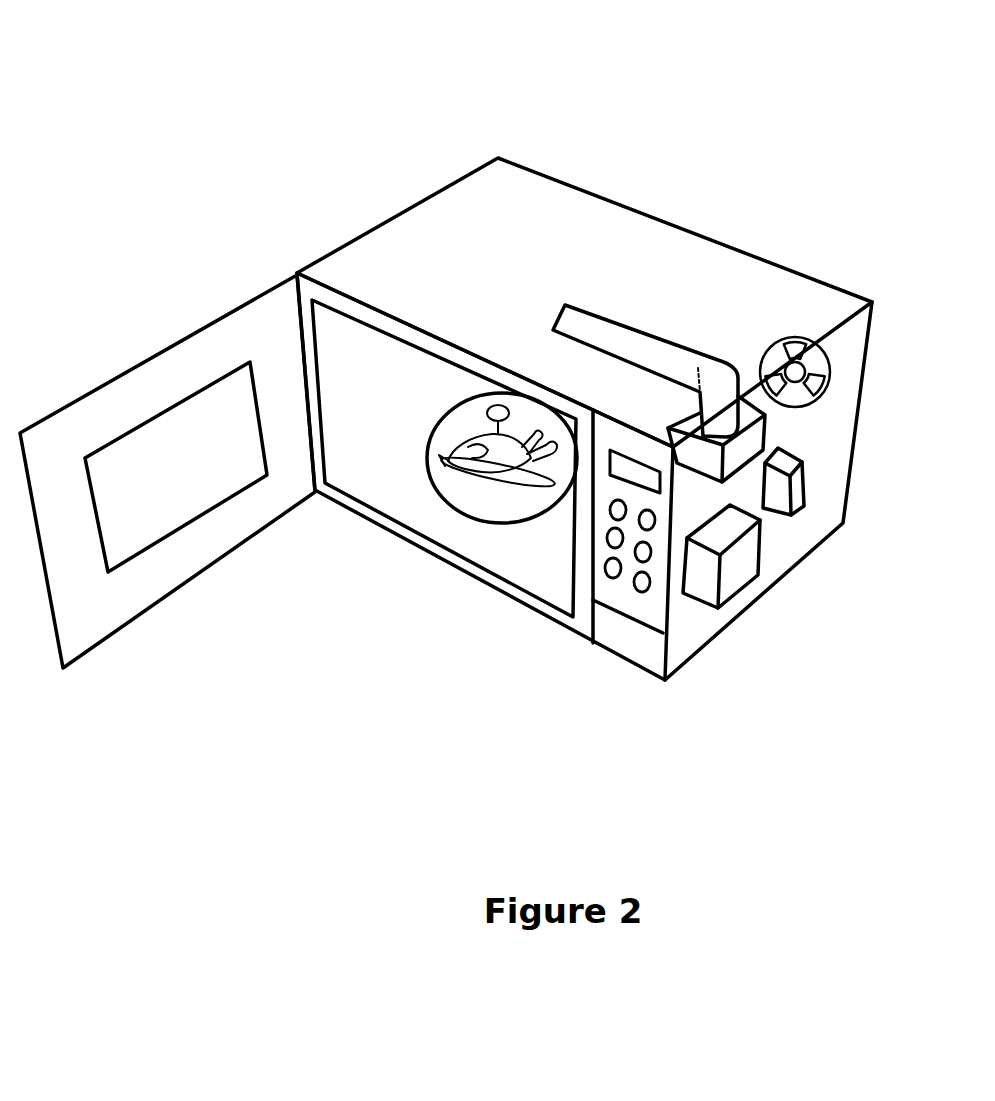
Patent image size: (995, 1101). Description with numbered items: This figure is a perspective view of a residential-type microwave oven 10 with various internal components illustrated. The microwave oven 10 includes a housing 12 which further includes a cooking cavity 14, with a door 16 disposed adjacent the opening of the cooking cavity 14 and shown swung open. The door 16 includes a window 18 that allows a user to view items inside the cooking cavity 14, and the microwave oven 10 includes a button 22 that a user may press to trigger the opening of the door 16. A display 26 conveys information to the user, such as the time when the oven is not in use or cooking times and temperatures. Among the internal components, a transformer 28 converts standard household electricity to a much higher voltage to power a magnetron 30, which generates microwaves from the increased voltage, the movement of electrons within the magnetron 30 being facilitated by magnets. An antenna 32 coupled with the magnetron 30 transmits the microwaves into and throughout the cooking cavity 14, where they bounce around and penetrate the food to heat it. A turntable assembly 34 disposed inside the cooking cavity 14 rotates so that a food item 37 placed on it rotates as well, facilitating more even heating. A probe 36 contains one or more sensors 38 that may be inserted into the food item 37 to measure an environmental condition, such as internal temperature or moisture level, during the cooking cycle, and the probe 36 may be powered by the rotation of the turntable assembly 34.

The microwave oven 10 is at (213, 105).
The housing 12 is at (502, 218).
The cooking cavity 14 is at (365, 360).
The door 16 is at (115, 595).
The window 18 is at (150, 518).
The button 22 is at (637, 643).
The display 26 is at (687, 577).
The transformer 28 is at (735, 572).
The magnetron 30 is at (735, 453).
The antenna 32 is at (593, 330).
The turntable assembly 34 is at (457, 497).
The probe 36 is at (490, 410).
The food item 37 is at (513, 463).
The sensor 38 is at (495, 430).